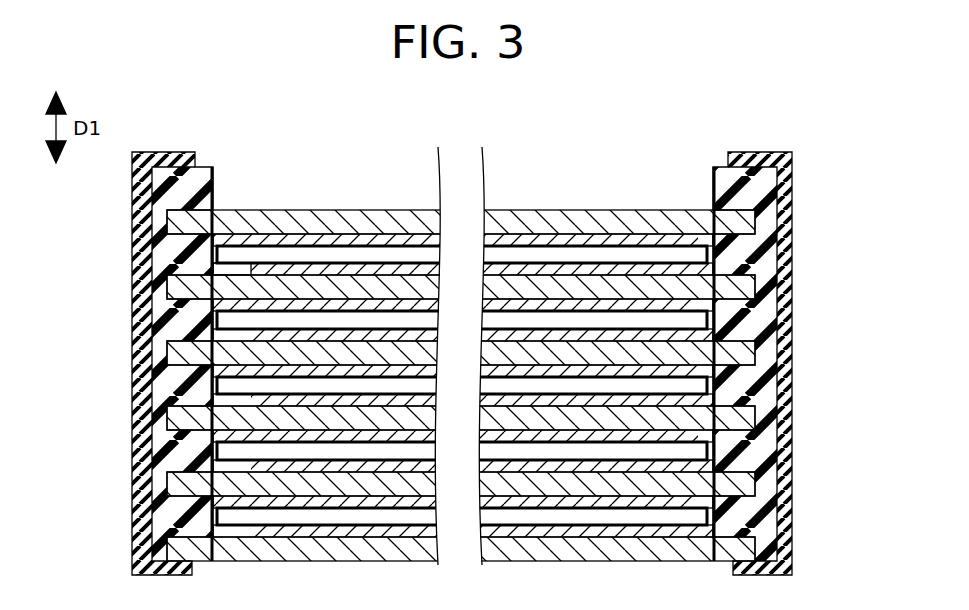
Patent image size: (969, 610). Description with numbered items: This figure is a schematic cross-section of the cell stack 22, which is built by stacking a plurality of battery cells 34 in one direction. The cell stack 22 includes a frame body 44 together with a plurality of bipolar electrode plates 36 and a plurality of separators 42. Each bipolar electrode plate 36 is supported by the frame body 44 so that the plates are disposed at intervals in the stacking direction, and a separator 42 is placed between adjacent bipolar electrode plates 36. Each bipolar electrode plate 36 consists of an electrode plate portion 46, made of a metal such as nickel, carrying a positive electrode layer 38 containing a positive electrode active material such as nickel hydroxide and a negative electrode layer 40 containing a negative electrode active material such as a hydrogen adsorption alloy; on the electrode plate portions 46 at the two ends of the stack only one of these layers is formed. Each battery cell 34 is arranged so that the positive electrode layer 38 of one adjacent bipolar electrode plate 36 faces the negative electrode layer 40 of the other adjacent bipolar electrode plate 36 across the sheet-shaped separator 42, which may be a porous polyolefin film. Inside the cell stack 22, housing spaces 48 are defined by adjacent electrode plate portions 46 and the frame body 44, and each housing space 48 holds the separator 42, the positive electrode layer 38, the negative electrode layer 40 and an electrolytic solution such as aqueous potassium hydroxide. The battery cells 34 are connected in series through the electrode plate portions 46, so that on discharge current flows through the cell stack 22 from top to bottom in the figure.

The cell stack 22 is at (614, 131).
The battery cell 34 is at (65, 420).
The bipolar electrode plate 36 is at (860, 388).
The positive electrode layer 38 is at (255, 466).
The negative electrode layer 40 is at (240, 437).
The separator 42 is at (228, 451).
The frame body 44 is at (793, 198).
The electrode plate portion 46 is at (757, 416).
The housing space 48 is at (225, 271).